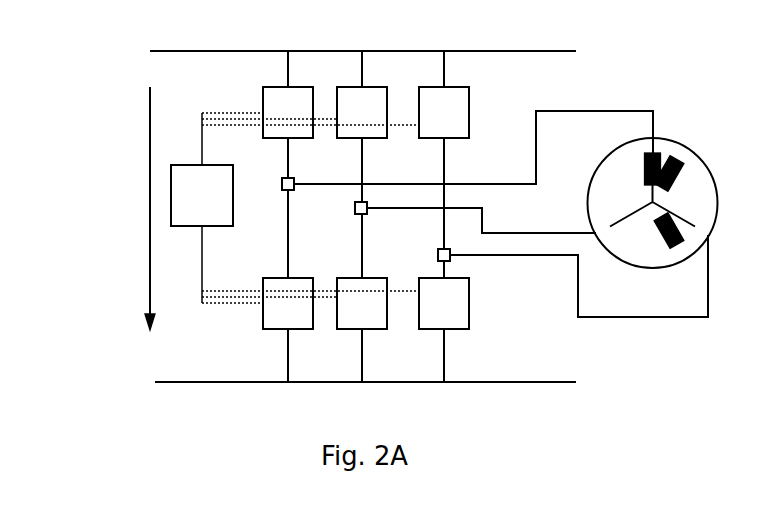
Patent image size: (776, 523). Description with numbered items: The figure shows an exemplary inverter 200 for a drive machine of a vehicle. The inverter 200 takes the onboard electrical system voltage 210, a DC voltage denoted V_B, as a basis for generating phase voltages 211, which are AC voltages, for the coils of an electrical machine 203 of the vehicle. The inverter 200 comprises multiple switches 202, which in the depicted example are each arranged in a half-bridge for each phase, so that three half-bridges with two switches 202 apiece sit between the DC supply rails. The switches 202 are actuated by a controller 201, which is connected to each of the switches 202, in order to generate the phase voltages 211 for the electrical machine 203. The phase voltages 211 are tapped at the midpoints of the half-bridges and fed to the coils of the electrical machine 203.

The inverter 200 is at (133, 58).
The controller 201 is at (215, 221).
The switches 202 is at (263, 97).
The electrical machine 203 is at (702, 175).
The onboard electrical system voltage 210 is at (150, 120).
The phase voltages 211 is at (493, 183).